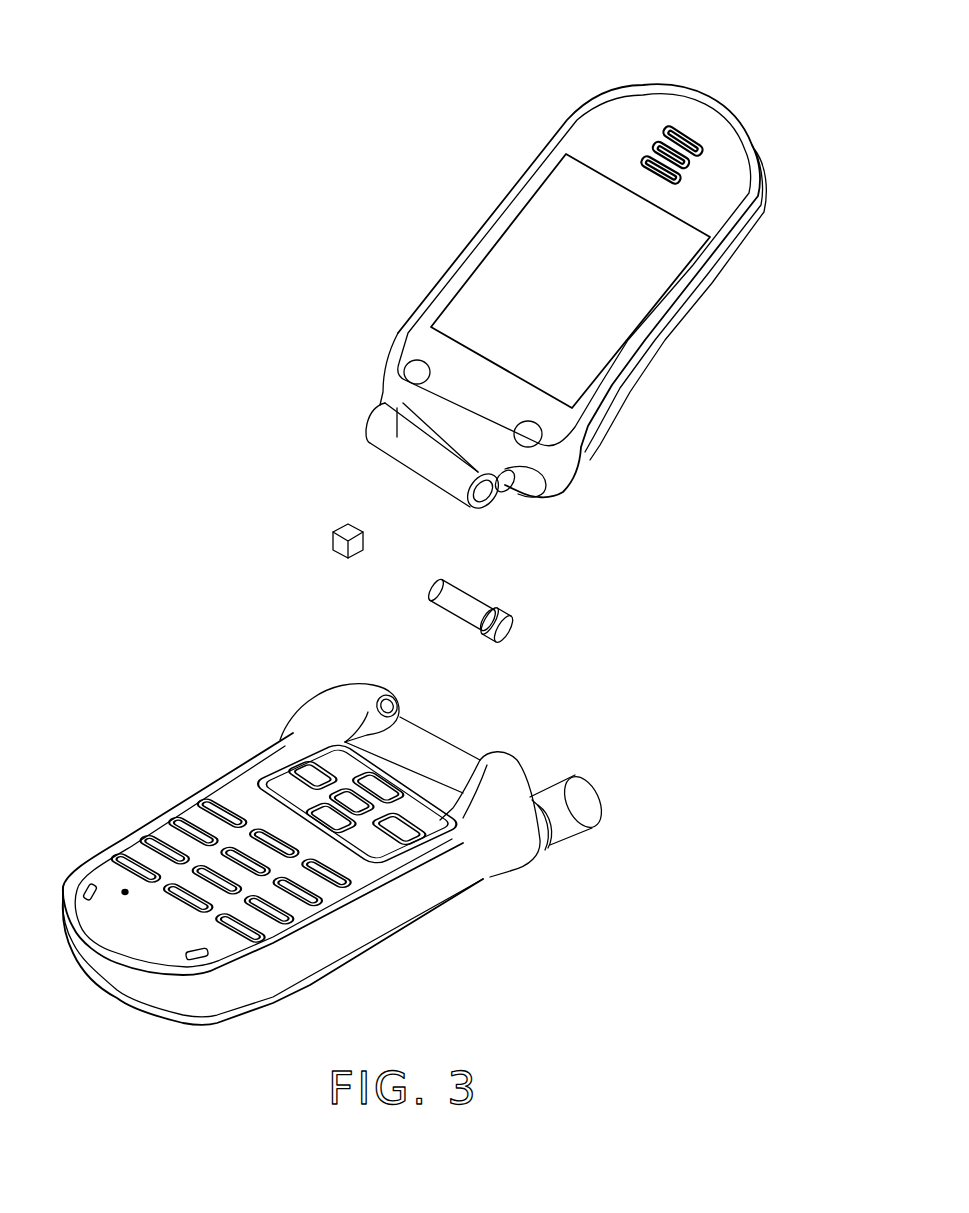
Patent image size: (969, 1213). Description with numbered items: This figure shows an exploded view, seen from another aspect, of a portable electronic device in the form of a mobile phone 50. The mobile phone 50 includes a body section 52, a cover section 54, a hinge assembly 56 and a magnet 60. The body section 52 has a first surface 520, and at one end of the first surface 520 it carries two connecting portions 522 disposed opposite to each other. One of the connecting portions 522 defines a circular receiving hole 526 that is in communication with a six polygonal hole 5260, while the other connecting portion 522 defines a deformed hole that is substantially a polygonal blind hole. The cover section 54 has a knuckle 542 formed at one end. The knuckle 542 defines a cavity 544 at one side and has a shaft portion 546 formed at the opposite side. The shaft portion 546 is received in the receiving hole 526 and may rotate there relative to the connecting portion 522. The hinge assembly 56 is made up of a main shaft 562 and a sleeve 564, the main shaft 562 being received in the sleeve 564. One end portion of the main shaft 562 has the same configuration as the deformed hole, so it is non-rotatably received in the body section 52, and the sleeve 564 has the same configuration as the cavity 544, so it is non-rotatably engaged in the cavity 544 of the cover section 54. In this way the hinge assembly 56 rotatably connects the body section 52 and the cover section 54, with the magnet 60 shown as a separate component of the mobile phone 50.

The mobile phone 50 is at (420, 28).
The body section 52 is at (410, 966).
The cover section 54 is at (468, 178).
The first surface 520 is at (237, 775).
The connecting portions 522 is at (337, 715).
The receiving hole 526 is at (390, 692).
The six polygonal hole 5260 is at (395, 706).
The knuckle 542 is at (385, 370).
The cavity 544 is at (512, 490).
The shaft portion 546 is at (372, 418).
The hinge assembly 56 is at (620, 590).
The main shaft 562 is at (498, 627).
The sleeve 564 is at (478, 607).
The magnet 60 is at (352, 528).